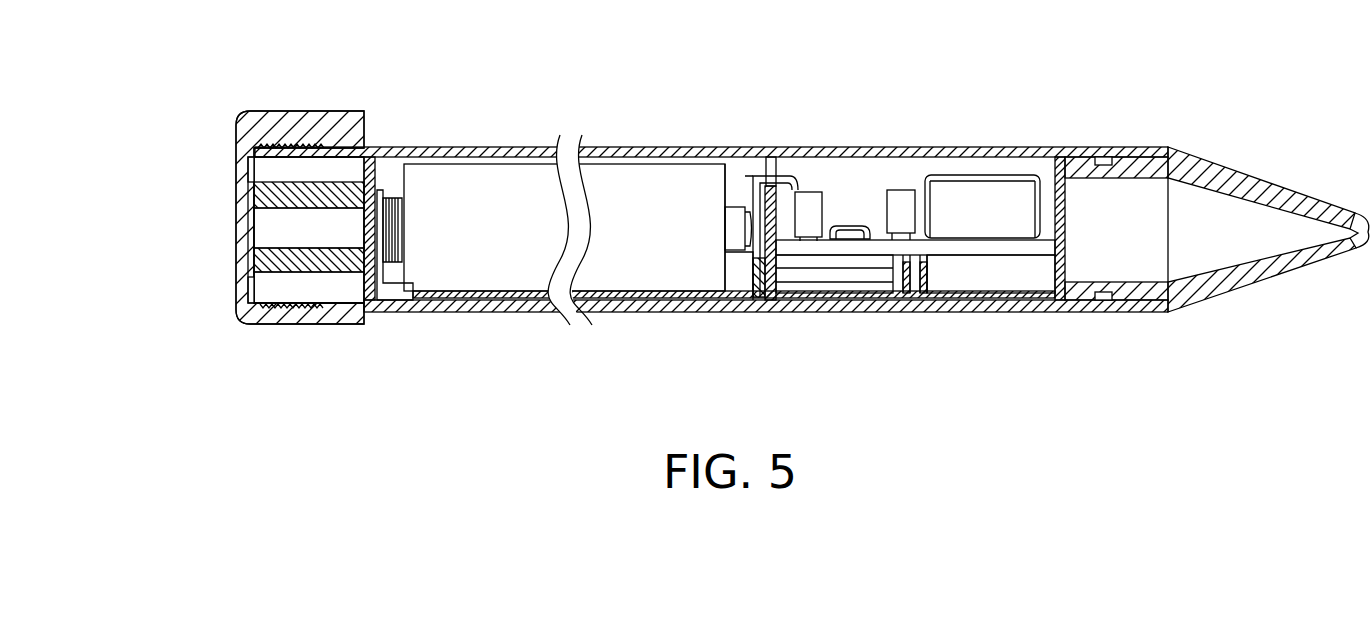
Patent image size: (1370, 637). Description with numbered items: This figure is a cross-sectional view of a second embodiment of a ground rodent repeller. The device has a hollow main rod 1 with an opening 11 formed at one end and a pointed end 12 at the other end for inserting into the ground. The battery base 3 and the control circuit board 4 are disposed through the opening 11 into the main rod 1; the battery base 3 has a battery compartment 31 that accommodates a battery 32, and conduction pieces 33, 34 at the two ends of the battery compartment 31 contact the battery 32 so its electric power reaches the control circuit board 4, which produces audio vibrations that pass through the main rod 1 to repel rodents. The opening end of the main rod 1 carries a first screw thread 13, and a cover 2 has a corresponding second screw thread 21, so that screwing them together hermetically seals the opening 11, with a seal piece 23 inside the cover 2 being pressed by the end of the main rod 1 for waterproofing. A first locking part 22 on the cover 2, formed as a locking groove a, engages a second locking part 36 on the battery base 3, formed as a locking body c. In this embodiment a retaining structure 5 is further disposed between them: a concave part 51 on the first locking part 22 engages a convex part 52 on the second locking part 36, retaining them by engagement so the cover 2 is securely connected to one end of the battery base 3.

The main rod 1 is at (519, 146).
The cover 2 is at (262, 106).
The battery base 3 is at (615, 302).
The control circuit board 4 is at (965, 172).
The retaining structure 5 is at (243, 230).
The opening 11 is at (288, 288).
The pointed end 12 is at (1233, 174).
The first screw thread 13 is at (248, 161).
The second screw thread 21 is at (283, 147).
The first locking part 22 is at (322, 190).
The seal piece 23 is at (244, 293).
The battery compartment 31 is at (742, 272).
The battery 32 is at (637, 195).
The conduction piece 33 is at (383, 205).
The conduction piece 34 is at (749, 177).
The second locking part 36 is at (402, 220).
The concave part 51 is at (250, 194).
The convex part 52 is at (290, 214).
The locking groove a is at (248, 283).
The locking body c is at (244, 257).